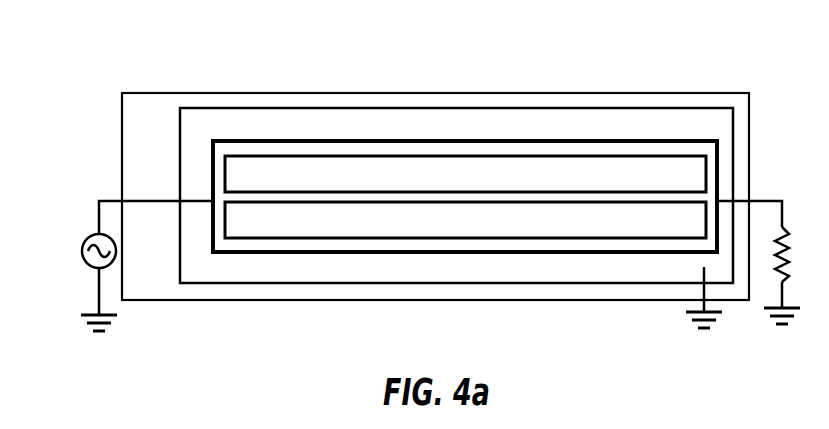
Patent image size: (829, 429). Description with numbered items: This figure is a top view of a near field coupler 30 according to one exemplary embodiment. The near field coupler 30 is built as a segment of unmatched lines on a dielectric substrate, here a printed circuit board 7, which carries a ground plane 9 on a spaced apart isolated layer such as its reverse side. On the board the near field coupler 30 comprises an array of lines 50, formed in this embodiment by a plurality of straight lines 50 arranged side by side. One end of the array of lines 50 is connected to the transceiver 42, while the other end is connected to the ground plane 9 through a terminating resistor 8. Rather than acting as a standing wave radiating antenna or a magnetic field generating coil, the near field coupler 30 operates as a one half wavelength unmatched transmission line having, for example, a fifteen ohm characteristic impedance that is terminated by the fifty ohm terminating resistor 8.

The printed circuit board 7 is at (750, 108).
The ground plane 9 is at (630, 118).
The near field coupler 30 is at (290, 93).
The array of lines 50 is at (338, 148).
The transceiver 42 is at (87, 240).
The terminating resistor 8 is at (764, 262).